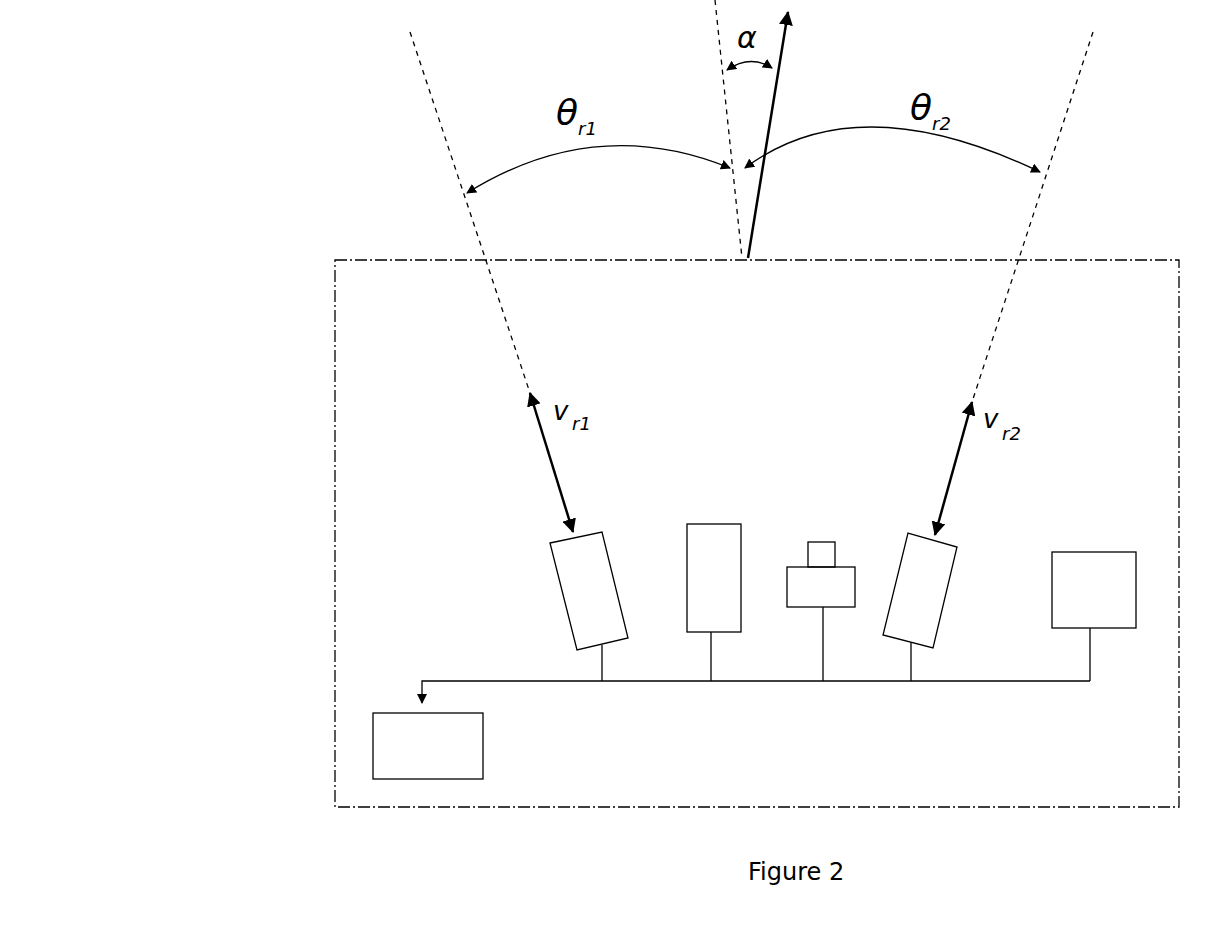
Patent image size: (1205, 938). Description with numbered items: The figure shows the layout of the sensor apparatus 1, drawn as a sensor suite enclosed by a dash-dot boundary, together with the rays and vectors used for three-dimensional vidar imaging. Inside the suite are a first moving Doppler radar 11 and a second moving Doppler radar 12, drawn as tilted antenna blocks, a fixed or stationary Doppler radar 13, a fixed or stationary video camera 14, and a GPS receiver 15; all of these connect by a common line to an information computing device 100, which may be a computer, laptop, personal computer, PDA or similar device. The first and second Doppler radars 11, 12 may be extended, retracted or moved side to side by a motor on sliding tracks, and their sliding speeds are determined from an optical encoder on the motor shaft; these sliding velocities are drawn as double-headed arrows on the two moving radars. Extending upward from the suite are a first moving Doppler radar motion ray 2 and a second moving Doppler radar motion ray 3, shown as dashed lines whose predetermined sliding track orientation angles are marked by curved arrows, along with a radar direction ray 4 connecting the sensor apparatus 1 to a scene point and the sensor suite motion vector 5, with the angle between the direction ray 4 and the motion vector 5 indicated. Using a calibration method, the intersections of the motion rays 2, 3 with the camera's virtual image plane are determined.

The sensor system 1 is at (377, 569).
The first moving Doppler radar motion ray 2 is at (447, 143).
The second moving Doppler radar motion ray 3 is at (1067, 115).
The radar direction ray 4 is at (724, 92).
The sensor suite motion vector 5 is at (776, 97).
The first moving Doppler radar 11 is at (595, 597).
The second moving Doppler radar 12 is at (920, 600).
The stationary Doppler radar 13 is at (700, 549).
The video camera 14 is at (837, 580).
The GPS receiver 15 is at (1065, 563).
The information computing device 100 is at (400, 748).